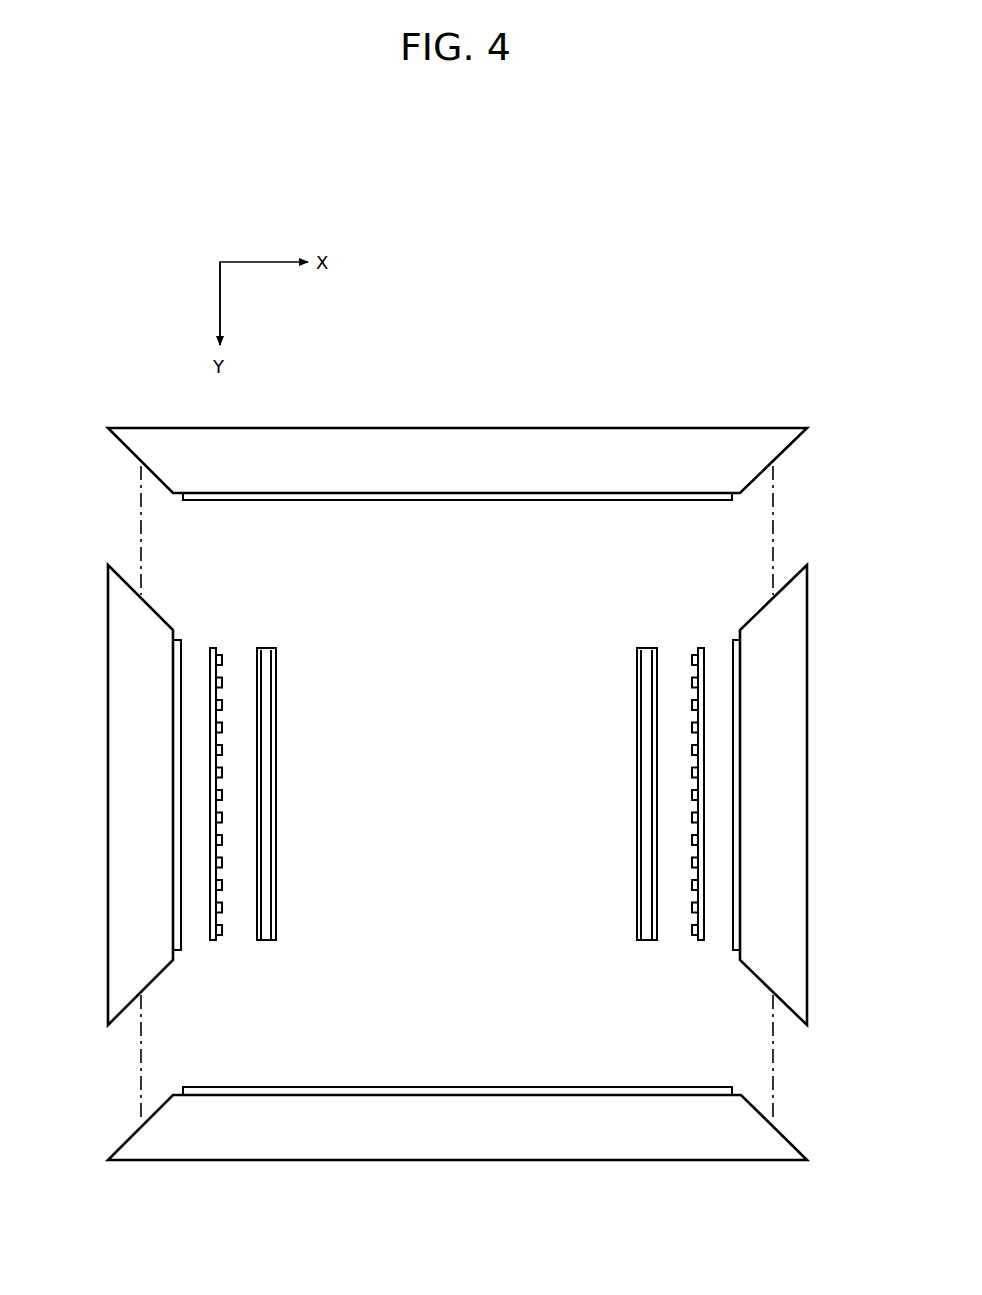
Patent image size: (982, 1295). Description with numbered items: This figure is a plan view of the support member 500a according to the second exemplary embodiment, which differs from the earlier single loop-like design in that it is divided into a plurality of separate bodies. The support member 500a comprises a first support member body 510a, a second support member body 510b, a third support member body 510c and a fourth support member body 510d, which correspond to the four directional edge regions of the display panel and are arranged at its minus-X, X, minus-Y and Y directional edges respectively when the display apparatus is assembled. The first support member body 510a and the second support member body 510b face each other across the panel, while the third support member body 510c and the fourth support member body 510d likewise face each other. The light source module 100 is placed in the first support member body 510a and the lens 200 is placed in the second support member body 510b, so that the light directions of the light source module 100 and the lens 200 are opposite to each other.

The support member 500a is at (712, 357).
The first support member body 510a is at (115, 782).
The second support member body 510b is at (797, 786).
The third support member body 510c is at (468, 435).
The fourth support member body 510d is at (449, 1153).
The light source module 100 is at (216, 640).
The lens 200 is at (270, 640).